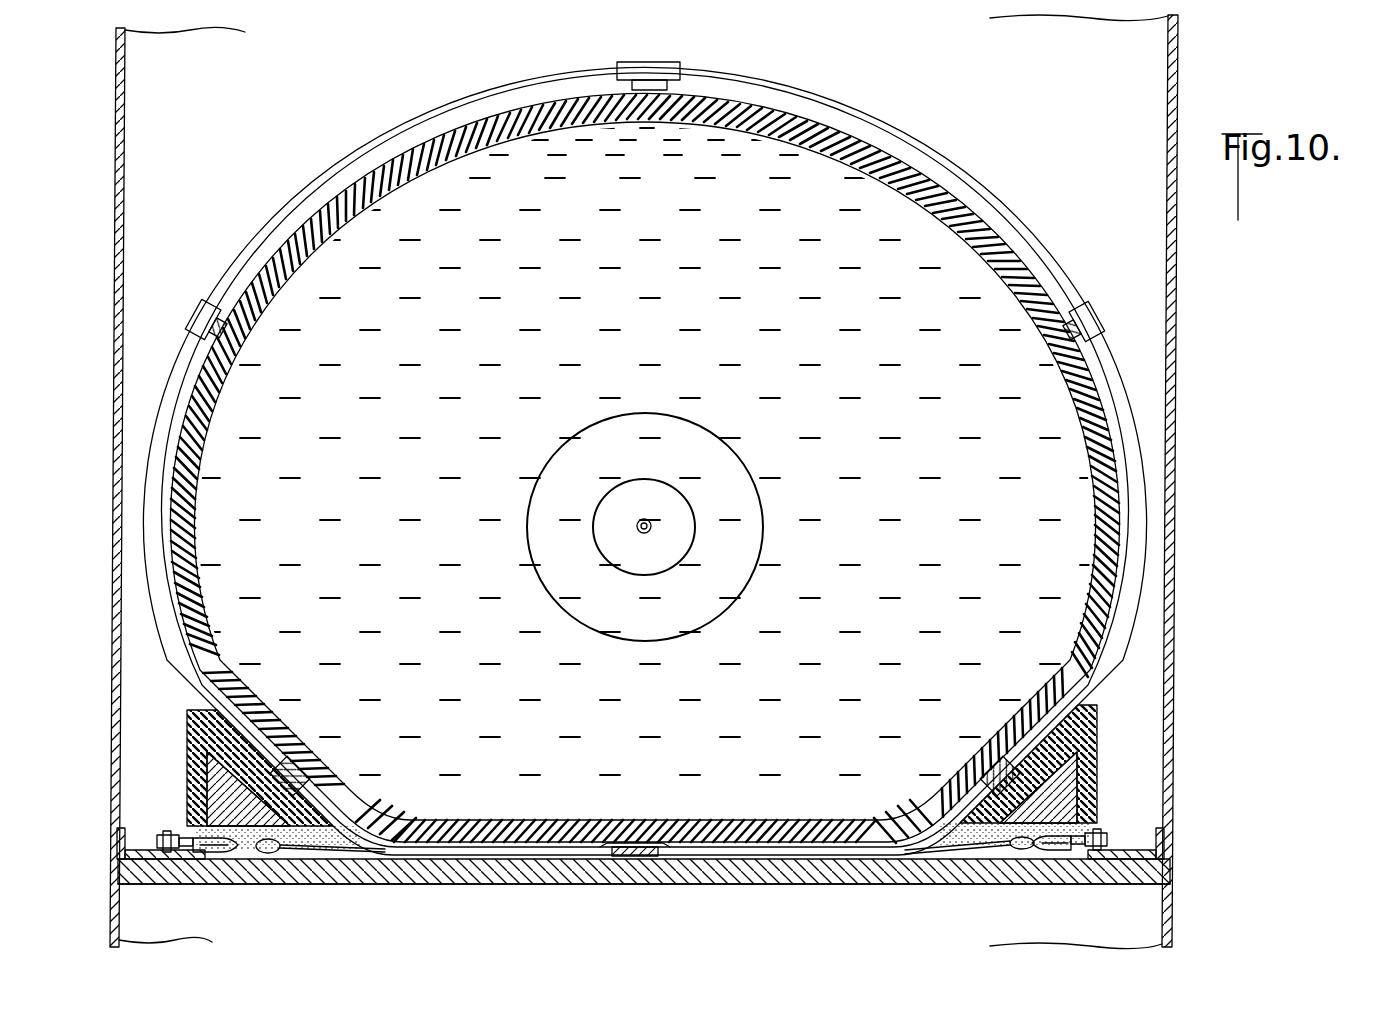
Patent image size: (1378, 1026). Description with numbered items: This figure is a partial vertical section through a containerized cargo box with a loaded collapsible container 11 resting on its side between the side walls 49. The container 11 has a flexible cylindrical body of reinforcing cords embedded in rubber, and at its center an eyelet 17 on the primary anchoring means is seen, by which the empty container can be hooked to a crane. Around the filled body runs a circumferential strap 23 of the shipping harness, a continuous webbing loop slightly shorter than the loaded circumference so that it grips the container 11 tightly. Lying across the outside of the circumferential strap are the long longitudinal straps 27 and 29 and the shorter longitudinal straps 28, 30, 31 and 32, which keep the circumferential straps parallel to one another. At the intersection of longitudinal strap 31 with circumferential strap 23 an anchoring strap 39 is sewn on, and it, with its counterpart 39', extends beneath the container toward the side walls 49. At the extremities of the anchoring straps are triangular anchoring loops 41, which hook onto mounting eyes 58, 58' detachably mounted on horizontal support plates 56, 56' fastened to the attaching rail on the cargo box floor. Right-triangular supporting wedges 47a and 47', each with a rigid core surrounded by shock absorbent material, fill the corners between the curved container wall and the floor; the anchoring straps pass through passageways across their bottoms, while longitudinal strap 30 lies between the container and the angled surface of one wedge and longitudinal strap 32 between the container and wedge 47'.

The collapsible container 11 is at (1010, 224).
The circumferential strap 23 is at (913, 157).
The eyelet 17 is at (677, 510).
The longitudinal strap 27 is at (1090, 304).
The longitudinal strap 28 is at (643, 63).
The longitudinal strap 29 is at (204, 301).
The longitudinal strap 30 is at (300, 768).
The longitudinal strap 32 is at (990, 768).
The longitudinal strap 31 is at (638, 843).
The anchoring strap 39 is at (332, 881).
The tie rod 39' is at (957, 879).
The triangular anchoring loop 41 is at (272, 855).
The support wedge 47a is at (207, 778).
The supporting wedge 47' is at (1052, 764).
The side wall 49 is at (113, 576).
The horizontal support plate 56 is at (185, 874).
The anchor bolt 56' is at (1108, 816).
The mounting eye 58 is at (229, 876).
The turnbuckle 58' is at (1066, 876).